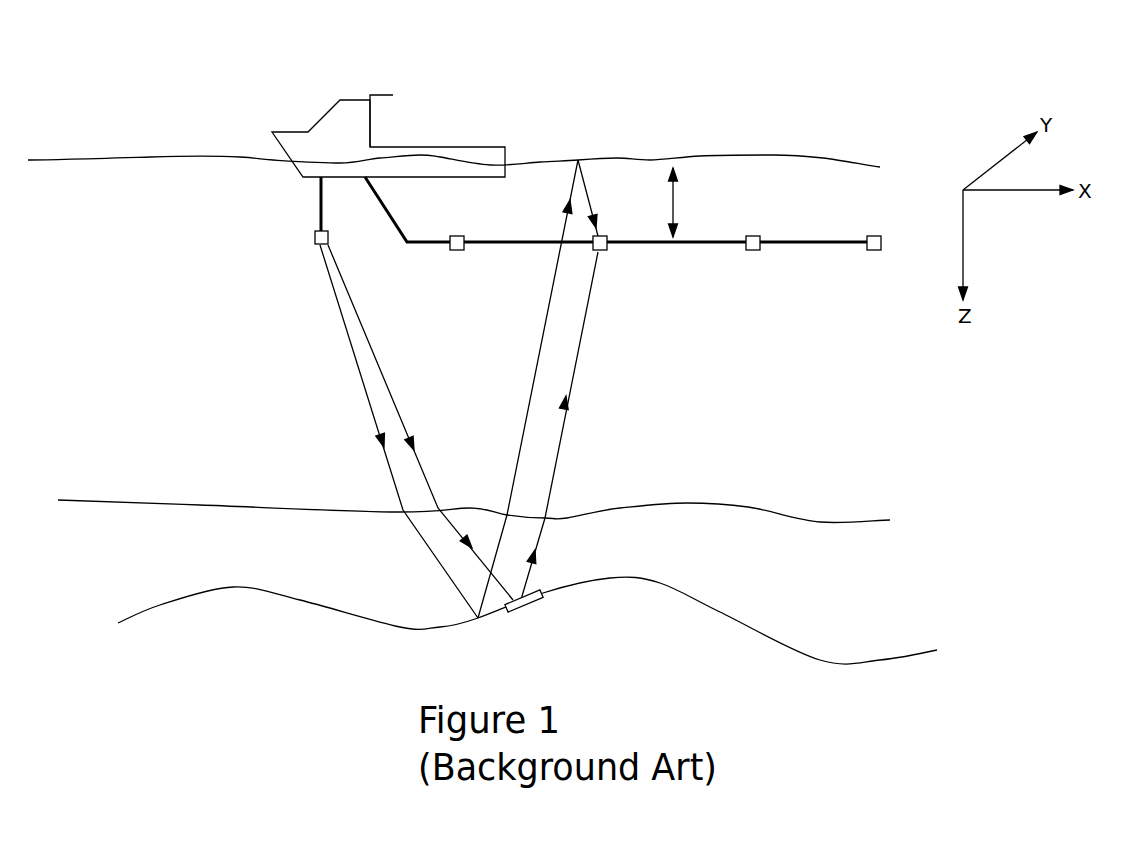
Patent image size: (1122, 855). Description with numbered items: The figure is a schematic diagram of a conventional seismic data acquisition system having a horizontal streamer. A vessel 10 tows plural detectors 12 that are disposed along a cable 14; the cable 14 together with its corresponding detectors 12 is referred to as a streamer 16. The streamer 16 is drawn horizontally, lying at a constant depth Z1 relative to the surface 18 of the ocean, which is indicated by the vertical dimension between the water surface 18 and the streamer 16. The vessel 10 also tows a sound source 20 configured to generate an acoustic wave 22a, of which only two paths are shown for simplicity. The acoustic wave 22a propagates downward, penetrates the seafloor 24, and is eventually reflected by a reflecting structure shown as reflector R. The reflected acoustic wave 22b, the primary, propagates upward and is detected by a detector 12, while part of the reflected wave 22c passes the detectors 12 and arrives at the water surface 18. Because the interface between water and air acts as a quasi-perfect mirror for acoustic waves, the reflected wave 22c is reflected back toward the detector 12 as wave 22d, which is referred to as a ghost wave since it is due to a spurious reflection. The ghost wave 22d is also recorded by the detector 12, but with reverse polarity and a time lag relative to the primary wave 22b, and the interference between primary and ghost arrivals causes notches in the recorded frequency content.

The vessel 10 is at (322, 127).
The detectors 12 is at (453, 251).
The cable 14 is at (437, 247).
The streamer 16 is at (623, 269).
The surface of the ocean 18 is at (618, 157).
The sound source 20 is at (314, 237).
The acoustic wave 22a is at (403, 431).
The reflected acoustic wave 22b is at (560, 456).
The reflected wave 22c is at (550, 295).
The ghost wave 22d is at (616, 198).
The seafloor 24 is at (748, 506).
The reflector R is at (517, 607).
The depth Z1 is at (677, 197).